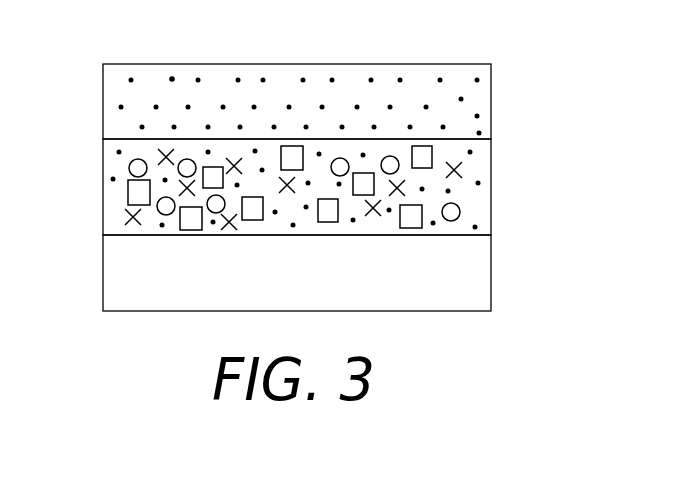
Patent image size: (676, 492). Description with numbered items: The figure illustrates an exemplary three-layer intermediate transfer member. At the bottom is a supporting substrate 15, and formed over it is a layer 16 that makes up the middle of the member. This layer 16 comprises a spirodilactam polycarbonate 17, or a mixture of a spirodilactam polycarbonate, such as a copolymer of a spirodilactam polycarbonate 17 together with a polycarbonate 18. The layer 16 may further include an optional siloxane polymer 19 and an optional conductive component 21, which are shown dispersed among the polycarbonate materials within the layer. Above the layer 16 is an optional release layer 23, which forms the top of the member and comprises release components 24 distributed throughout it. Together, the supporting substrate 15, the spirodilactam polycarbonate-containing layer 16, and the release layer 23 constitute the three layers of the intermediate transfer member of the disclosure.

The supporting substrate 15 is at (102, 268).
The layer 16 is at (102, 182).
The spirodilactam polycarbonate 17 is at (461, 212).
The polycarbonate 18 is at (130, 197).
The siloxane polymer 19 is at (461, 167).
The conductive component 21 is at (480, 184).
The release layer 23 is at (492, 97).
The release components 24 is at (172, 78).